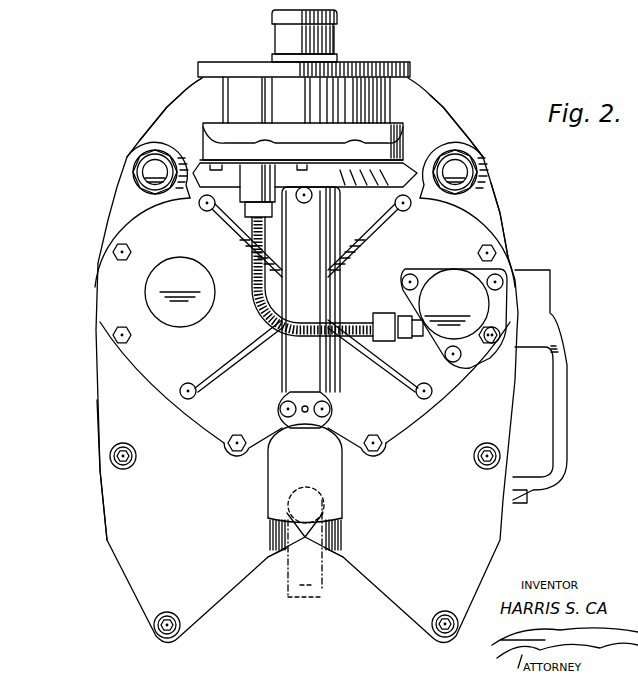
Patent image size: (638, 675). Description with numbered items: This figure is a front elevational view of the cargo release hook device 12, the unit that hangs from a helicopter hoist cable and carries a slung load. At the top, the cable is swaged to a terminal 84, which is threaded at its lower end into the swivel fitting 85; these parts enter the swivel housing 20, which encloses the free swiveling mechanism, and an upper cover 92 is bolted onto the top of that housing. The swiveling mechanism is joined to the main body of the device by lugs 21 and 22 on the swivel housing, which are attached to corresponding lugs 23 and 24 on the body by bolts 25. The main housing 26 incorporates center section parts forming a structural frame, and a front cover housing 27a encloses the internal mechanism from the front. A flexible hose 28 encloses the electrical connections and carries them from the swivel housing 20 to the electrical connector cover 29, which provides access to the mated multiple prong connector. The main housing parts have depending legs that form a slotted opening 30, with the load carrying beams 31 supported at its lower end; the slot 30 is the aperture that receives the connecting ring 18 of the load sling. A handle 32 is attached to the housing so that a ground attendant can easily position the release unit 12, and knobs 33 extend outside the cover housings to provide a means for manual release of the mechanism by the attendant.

The cargo release hook device 12 is at (92, 391).
The connecting ring 18 is at (320, 590).
The swivel housing 20 is at (386, 103).
The lug 21 is at (456, 128).
The lug 22 is at (167, 103).
The lug 23 is at (499, 208).
The lug 24 is at (105, 203).
The bolts 25 is at (150, 172).
The main housing 26 is at (122, 490).
The front cover housing 27a is at (483, 238).
The flexible hose 28 is at (255, 293).
The electrical connector cover 29 is at (470, 282).
The slotted opening 30 is at (272, 468).
The load carrying beams 31 is at (273, 560).
The handle 32 is at (568, 368).
The knobs 33 is at (145, 291).
The terminal 84 is at (337, 14).
The swivel fitting 85 is at (338, 44).
The upper cover 92 is at (407, 66).